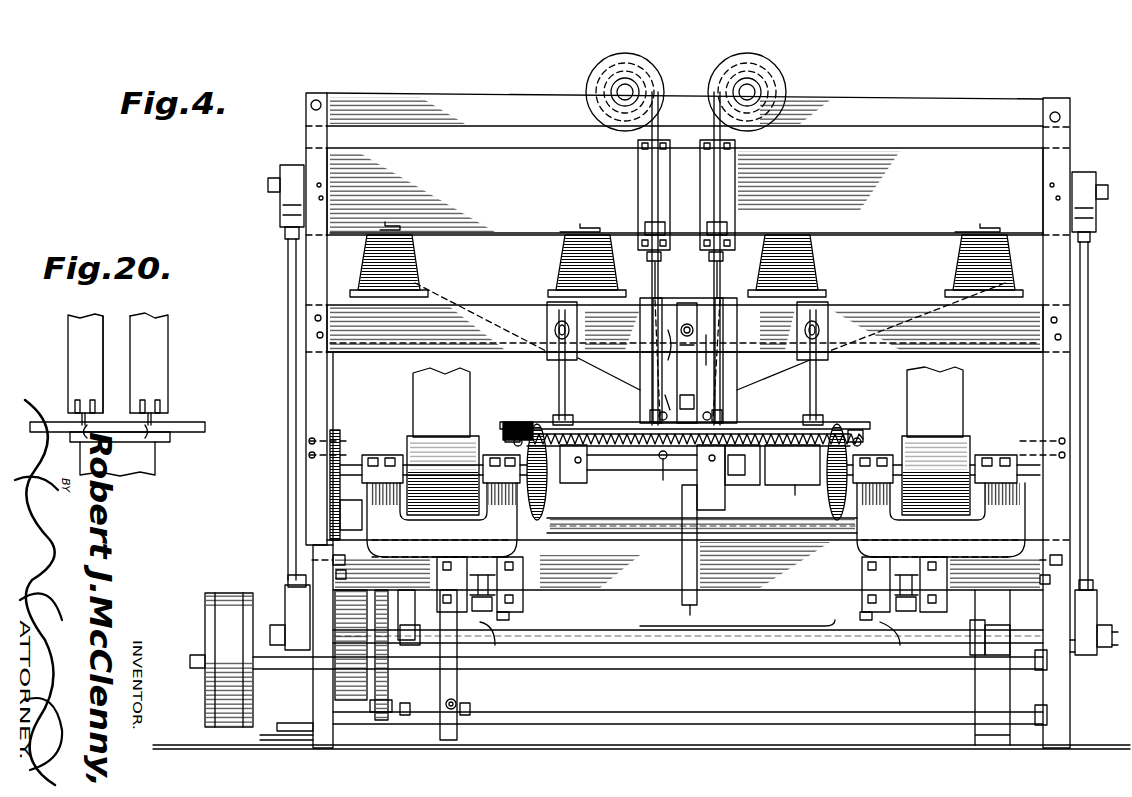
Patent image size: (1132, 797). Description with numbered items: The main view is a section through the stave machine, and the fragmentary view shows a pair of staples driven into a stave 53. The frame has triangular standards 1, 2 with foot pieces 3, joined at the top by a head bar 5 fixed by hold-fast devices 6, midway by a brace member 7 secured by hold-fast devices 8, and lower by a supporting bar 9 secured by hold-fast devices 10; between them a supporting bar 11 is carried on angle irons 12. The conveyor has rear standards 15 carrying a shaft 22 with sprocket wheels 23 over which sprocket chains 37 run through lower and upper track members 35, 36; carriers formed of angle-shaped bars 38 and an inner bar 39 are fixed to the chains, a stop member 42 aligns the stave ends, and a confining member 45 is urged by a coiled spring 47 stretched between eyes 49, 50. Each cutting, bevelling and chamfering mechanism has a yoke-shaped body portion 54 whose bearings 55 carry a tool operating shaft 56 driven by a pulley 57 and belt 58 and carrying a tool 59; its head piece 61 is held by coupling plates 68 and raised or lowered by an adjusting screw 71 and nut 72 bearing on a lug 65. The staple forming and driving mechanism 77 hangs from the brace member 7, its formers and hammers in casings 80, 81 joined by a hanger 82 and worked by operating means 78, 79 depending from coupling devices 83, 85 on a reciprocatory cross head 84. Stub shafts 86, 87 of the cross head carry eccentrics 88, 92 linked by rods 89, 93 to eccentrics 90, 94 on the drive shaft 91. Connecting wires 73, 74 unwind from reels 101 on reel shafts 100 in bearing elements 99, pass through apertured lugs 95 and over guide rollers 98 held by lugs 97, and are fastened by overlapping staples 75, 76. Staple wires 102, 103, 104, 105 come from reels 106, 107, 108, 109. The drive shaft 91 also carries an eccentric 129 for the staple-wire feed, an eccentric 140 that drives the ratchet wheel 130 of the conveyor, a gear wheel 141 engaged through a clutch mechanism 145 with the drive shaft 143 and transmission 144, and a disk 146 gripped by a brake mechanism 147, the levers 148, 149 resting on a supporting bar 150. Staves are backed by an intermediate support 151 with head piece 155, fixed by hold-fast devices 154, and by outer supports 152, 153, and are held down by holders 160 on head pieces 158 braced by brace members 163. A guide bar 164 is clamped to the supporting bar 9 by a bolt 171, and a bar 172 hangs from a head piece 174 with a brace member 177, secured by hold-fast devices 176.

In FIG. 4, the standard 1 is at (355, 378).
In FIG. 4, the standard 2 is at (1048, 378).
In FIG. 4, the foot piece 3 is at (740, 735).
In FIG. 4, the head bar 5 is at (908, 108).
In FIG. 4, the hold-fast device 6 is at (1075, 117).
In FIG. 4, the brace member 7 is at (1015, 340).
In FIG. 4, the hold-fast devices 8 is at (1052, 337).
In FIG. 4, the supporting bar 9 is at (1040, 545).
In FIG. 4, the hold-fast devices 10 is at (1045, 560).
In FIG. 4, the supporting bar 11 is at (1005, 430).
In FIG. 4, the angle irons 12 is at (1020, 428).
In FIG. 4, the rear standards 15 is at (975, 695).
In FIG. 4, the shaft 22 is at (790, 545).
In FIG. 4, the sprocket wheels 23 is at (855, 595).
In FIG. 4, the lower track members 35 is at (693, 622).
In FIG. 4, the upper track members 36 is at (865, 436).
In FIG. 4, the sprocket chain 37 is at (866, 430).
In FIG. 4, the angle-shaped bar 38 is at (858, 425).
In FIG. 4, the bar 39 is at (778, 626).
In FIG. 4, the stop member 42 is at (908, 425).
In FIG. 4, the confining member 45 is at (503, 425).
In FIG. 4, the coiled spring 47 is at (760, 450).
In FIG. 4, the eye 49 is at (505, 448).
In FIG. 4, the eye 50 is at (860, 444).
In FIG. 4, the bar 53 is at (604, 425).
In FIG. 20, the bar 53 is at (188, 422).
In FIG. 4, the yoke-shaped body portion 54 is at (948, 548).
In FIG. 4, the bearing 55 is at (980, 470).
In FIG. 4, the tool operating shaft 56 is at (1010, 485).
In FIG. 4, the driving pulley 57 is at (935, 440).
In FIG. 4, the transmission belt 58 is at (934, 382).
In FIG. 4, the tool 59 is at (840, 488).
In FIG. 4, the head piece 61 is at (691, 547).
In FIG. 4, the apertured lug 65 is at (715, 640).
In FIG. 4, the coupling plates 68 is at (948, 600).
In FIG. 4, the adjusting screw 71 is at (490, 587).
In FIG. 4, the adjusting nut 72 is at (703, 614).
In FIG. 20, the connecting wire 73 is at (88, 435).
In FIG. 20, the connecting wire 74 is at (145, 435).
In FIG. 4, the staples 75 is at (642, 162).
In FIG. 20, the staples 75 is at (116, 364).
In FIG. 4, the staples 76 is at (720, 170).
In FIG. 4, the combined staple forming and driving mechanism 77 is at (686, 279).
In FIG. 4, the operating means 78 is at (663, 266).
In FIG. 4, the operating means 79 is at (705, 262).
In FIG. 4, the casing 80 is at (648, 372).
In FIG. 20, the casing 80 is at (70, 353).
In FIG. 4, the casing 81 is at (728, 372).
In FIG. 20, the casing 81 is at (160, 355).
In FIG. 4, the hanger 82 is at (662, 345).
In FIG. 4, the coupling device 83 is at (642, 188).
In FIG. 4, the reciprocatory cross head 84 is at (685, 191).
In FIG. 4, the coupling device 85 is at (727, 180).
In FIG. 4, the stub shaft 86 is at (1104, 184).
In FIG. 4, the stub shaft 87 is at (268, 180).
In FIG. 4, the eccentric 88 is at (1078, 172).
In FIG. 4, the rod 89 is at (1090, 355).
In FIG. 4, the eccentric 90 is at (1092, 612).
In FIG. 4, the drive shaft 91 is at (1015, 632).
In FIG. 4, the eccentric 92 is at (288, 164).
In FIG. 4, the rod 93 is at (286, 265).
In FIG. 4, the eccentric 94 is at (285, 607).
In FIG. 4, the apertured lug 95 is at (645, 226).
In FIG. 4, the lugs 97 is at (725, 415).
In FIG. 20, the lugs 97 is at (157, 398).
In FIG. 4, the grooved guide roller 98 is at (712, 418).
In FIG. 4, the bearing element 99 is at (768, 88).
In FIG. 4, the reel shaft 100 is at (742, 85).
In FIG. 4, the reel 101 is at (768, 56).
In FIG. 4, the staple wire 102 is at (642, 292).
In FIG. 4, the staple wire 103 is at (475, 300).
In FIG. 4, the staple wire 104 is at (752, 290).
In FIG. 4, the staple wire 105 is at (871, 336).
In FIG. 4, the reel 106 is at (552, 288).
In FIG. 4, the reel 107 is at (358, 282).
In FIG. 4, the reel 108 is at (835, 292).
In FIG. 4, the reel 109 is at (1018, 292).
In FIG. 4, the eccentric 129 is at (995, 660).
In FIG. 4, the ratchet wheel 130 is at (338, 523).
In FIG. 4, the eccentric 140 is at (405, 590).
In FIG. 4, the gear wheel 141 is at (335, 688).
In FIG. 4, the drive shaft 143 is at (735, 670).
In FIG. 4, the transmission 144 is at (220, 592).
In FIG. 4, the clutch mechanism 145 is at (388, 685).
In FIG. 4, the disk 146 is at (470, 685).
In FIG. 4, the brake mechanism 147 is at (458, 700).
In FIG. 4, the lever 148 is at (300, 718).
In FIG. 4, the lever 149 is at (290, 741).
In FIG. 4, the supporting bar 150 is at (640, 725).
In FIG. 4, the intermediate support 151 is at (735, 485).
In FIG. 20, the intermediate support 151 is at (145, 457).
In FIG. 4, the outer support 152 is at (792, 477).
In FIG. 4, the outer support 153 is at (583, 466).
In FIG. 4, the hold-fast devices 154 is at (663, 472).
In FIG. 4, the head piece 155 is at (740, 465).
In FIG. 4, the head piece 158 is at (822, 320).
In FIG. 4, the holder 160 is at (806, 412).
In FIG. 4, the brace member 163 is at (815, 385).
In FIG. 4, the bar 164 is at (713, 467).
In FIG. 4, the bolt 171 is at (700, 605).
In FIG. 4, the bar 172 is at (670, 402).
In FIG. 4, the head piece 174 is at (676, 363).
In FIG. 4, the hold-fast devices 176 is at (690, 385).
In FIG. 4, the brace member 177 is at (712, 350).